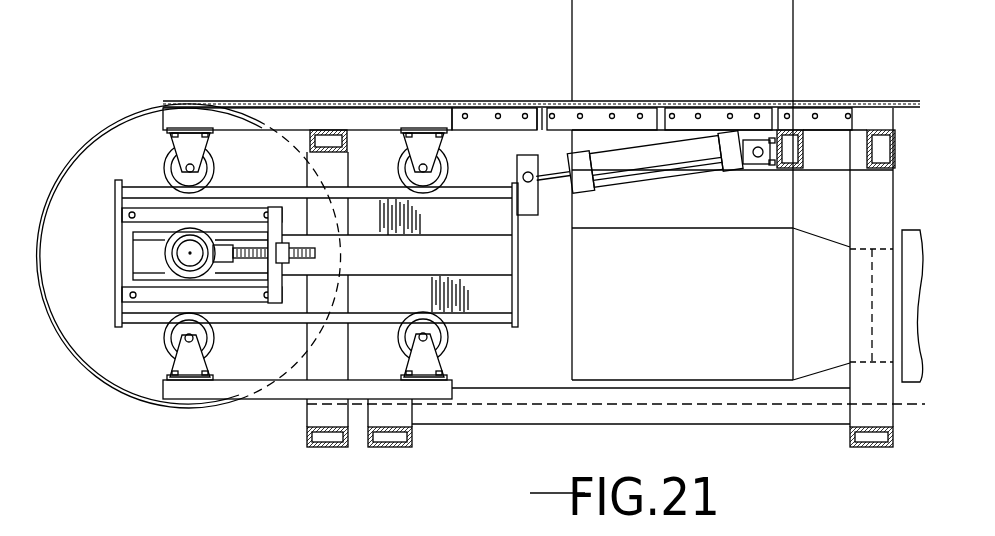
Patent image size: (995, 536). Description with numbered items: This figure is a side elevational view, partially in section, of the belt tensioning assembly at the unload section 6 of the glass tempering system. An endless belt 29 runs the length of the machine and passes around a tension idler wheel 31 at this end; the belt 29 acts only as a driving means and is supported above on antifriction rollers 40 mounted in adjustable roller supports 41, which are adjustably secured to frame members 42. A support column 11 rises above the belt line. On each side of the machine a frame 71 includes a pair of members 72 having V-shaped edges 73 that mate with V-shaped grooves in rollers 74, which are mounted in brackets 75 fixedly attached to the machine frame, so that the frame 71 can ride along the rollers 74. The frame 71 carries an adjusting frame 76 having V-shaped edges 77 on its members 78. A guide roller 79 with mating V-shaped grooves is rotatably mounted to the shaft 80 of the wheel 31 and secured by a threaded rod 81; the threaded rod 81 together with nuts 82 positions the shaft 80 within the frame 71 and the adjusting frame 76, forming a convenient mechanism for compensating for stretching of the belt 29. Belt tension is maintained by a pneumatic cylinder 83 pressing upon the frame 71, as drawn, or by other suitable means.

The unload section 6 is at (418, 58).
The support column 11 is at (783, 33).
The endless belt 29 is at (276, 100).
The tension idler wheel 31 is at (118, 143).
The antifriction roller 40 is at (530, 105).
The adjustable roller support 41 is at (483, 118).
The frame member 42 is at (376, 128).
The frame 71 is at (314, 246).
The member 72 is at (475, 218).
The V-shaped edge 73 is at (490, 197).
The roller 74 is at (213, 172).
The bracket 75 is at (200, 143).
The adjusting frame 76 is at (297, 230).
The V-shaped edge 77 is at (252, 232).
The member 78 is at (128, 215).
The guide roller 79 is at (167, 260).
The shaft 80 is at (188, 253).
The threaded rod 81 is at (268, 262).
The nut 82 is at (287, 264).
The pneumatic cylinder 83 is at (650, 160).